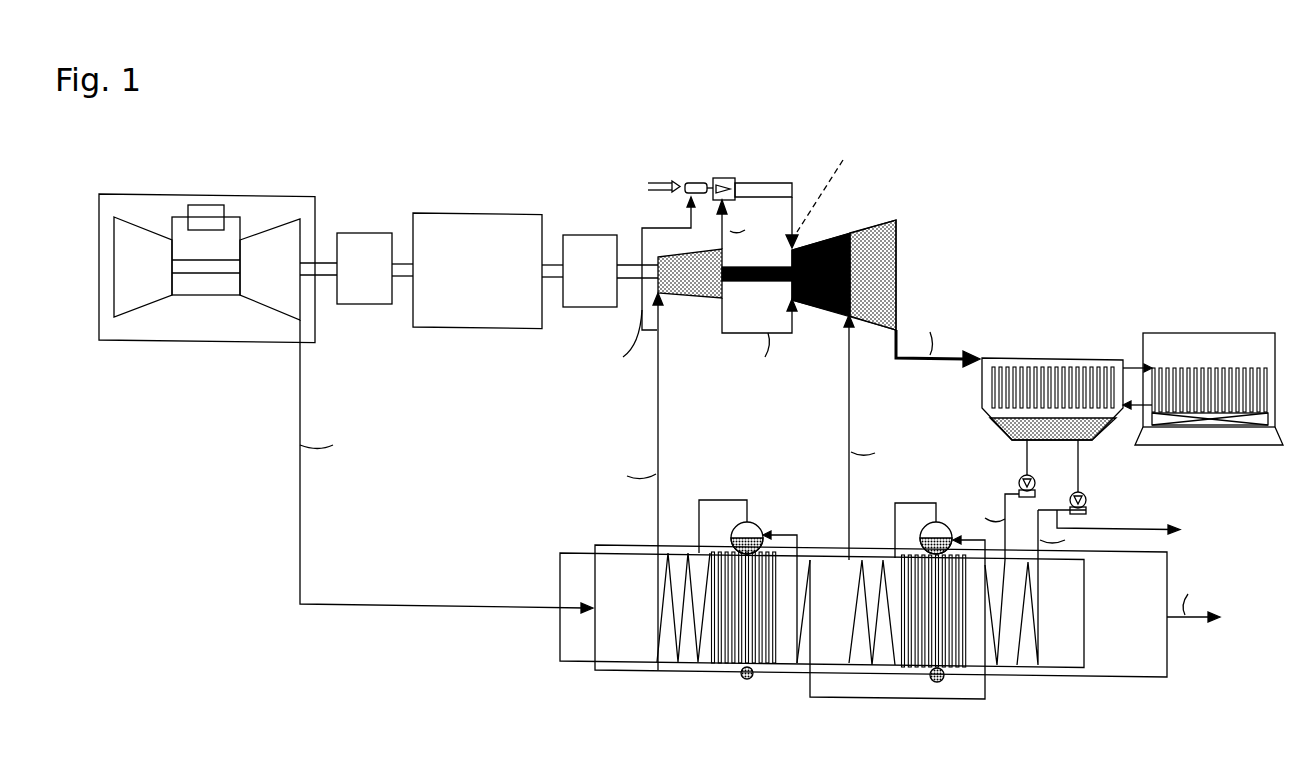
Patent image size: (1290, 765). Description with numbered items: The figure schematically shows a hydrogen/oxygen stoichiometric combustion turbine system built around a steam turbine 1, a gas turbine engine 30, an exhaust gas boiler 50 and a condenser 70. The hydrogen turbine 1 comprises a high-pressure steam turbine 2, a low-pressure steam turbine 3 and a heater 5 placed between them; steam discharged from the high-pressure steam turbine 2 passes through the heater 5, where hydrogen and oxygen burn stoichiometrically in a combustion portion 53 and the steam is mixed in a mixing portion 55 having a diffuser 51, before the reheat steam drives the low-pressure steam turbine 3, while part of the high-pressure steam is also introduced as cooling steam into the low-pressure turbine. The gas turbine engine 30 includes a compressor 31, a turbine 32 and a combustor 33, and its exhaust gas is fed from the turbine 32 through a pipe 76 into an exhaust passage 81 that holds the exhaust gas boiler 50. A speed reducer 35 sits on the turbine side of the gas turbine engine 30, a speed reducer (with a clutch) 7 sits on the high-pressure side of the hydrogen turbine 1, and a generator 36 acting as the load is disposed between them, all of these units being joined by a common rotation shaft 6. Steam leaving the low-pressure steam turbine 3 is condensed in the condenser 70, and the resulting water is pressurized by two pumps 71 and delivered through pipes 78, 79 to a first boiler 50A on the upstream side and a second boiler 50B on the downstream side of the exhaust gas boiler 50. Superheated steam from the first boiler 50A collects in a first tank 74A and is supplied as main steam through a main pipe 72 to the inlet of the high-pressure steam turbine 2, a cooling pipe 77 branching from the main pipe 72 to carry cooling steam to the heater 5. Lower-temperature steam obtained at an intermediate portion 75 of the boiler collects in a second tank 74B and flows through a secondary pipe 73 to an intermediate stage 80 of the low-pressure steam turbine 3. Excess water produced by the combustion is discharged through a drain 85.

The steam turbine 1 is at (804, 129).
The high-pressure steam turbine 2 is at (700, 290).
The low-pressure steam turbine 3 is at (812, 305).
The heater 5 is at (738, 175).
The common rotation shaft 6 is at (178, 275).
The speed reducer (with a clutch) 7 is at (588, 250).
The gas turbine engine 30 is at (268, 186).
The compressor 31 is at (125, 293).
The turbine 32 is at (263, 292).
The combustor 33 is at (205, 205).
The speed reducer 35 is at (360, 247).
The generator 36 is at (477, 230).
The exhaust gas boiler 50 is at (863, 600).
The first boiler 50A is at (765, 667).
The second boiler 50B is at (910, 670).
The diffuser 51 is at (748, 182).
The combustion portion 53 is at (695, 182).
The mixing portion 55 is at (722, 178).
The condenser 70 is at (1100, 339).
The pump 71 is at (1020, 478).
The main pipe 72 is at (660, 397).
The secondary pipe 73 is at (853, 400).
The first tank 74A is at (750, 523).
The second tank 74B is at (938, 522).
The intermediate portion 75 is at (849, 560).
The pipe 76 is at (300, 548).
The cooling pipe 77 is at (648, 332).
The pipe 78 is at (1029, 461).
The pipe 79 is at (1080, 461).
The intermediate stage 80 is at (845, 318).
The exhaust passage 81 is at (603, 665).
The drain 85 is at (1150, 527).